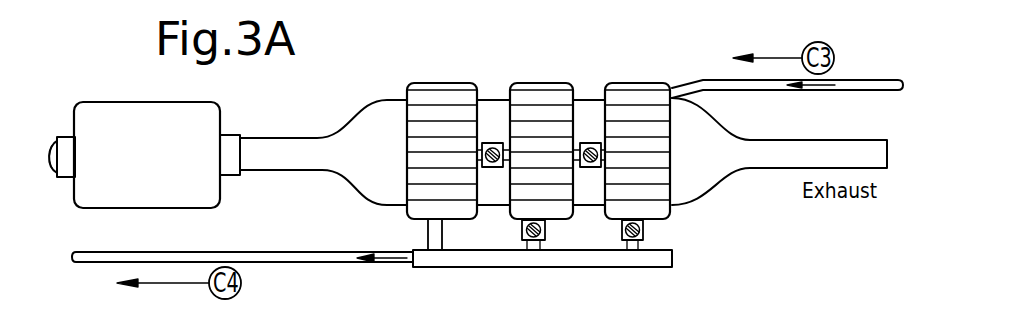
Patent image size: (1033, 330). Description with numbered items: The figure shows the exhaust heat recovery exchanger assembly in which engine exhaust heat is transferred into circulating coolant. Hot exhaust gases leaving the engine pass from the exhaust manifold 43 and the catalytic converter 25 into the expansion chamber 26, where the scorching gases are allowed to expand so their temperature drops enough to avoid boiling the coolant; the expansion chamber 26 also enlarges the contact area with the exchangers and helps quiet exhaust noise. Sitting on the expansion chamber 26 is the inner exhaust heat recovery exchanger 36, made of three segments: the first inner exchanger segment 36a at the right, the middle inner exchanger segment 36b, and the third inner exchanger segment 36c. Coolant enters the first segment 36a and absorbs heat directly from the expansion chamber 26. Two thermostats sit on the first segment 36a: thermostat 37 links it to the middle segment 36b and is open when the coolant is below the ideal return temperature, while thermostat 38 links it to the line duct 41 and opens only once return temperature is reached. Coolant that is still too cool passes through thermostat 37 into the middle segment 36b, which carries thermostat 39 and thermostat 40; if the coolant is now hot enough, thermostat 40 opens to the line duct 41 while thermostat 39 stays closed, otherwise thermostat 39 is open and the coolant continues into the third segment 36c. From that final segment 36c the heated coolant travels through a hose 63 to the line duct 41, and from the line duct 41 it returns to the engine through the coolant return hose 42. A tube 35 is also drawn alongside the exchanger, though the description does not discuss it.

The catalytic converter 25 is at (216, 206).
The exhaust manifold 43 is at (54, 138).
The expansion chamber 26 is at (350, 121).
The inner exhaust heat recovery exchanger 36 is at (546, 122).
The first inner exchanger segment 36a is at (662, 41).
The middle inner exchanger segment 36b is at (563, 83).
The third inner exchanger segment 36c is at (460, 83).
The thermostat 39 is at (492, 167).
The thermostat 37 is at (590, 167).
The thermostat 40 is at (522, 231).
The thermostat 38 is at (622, 231).
The hose 63 is at (428, 240).
The line duct 41 is at (490, 268).
The coolant return hose 42 is at (326, 252).
The bypass tube 35 is at (753, 91).